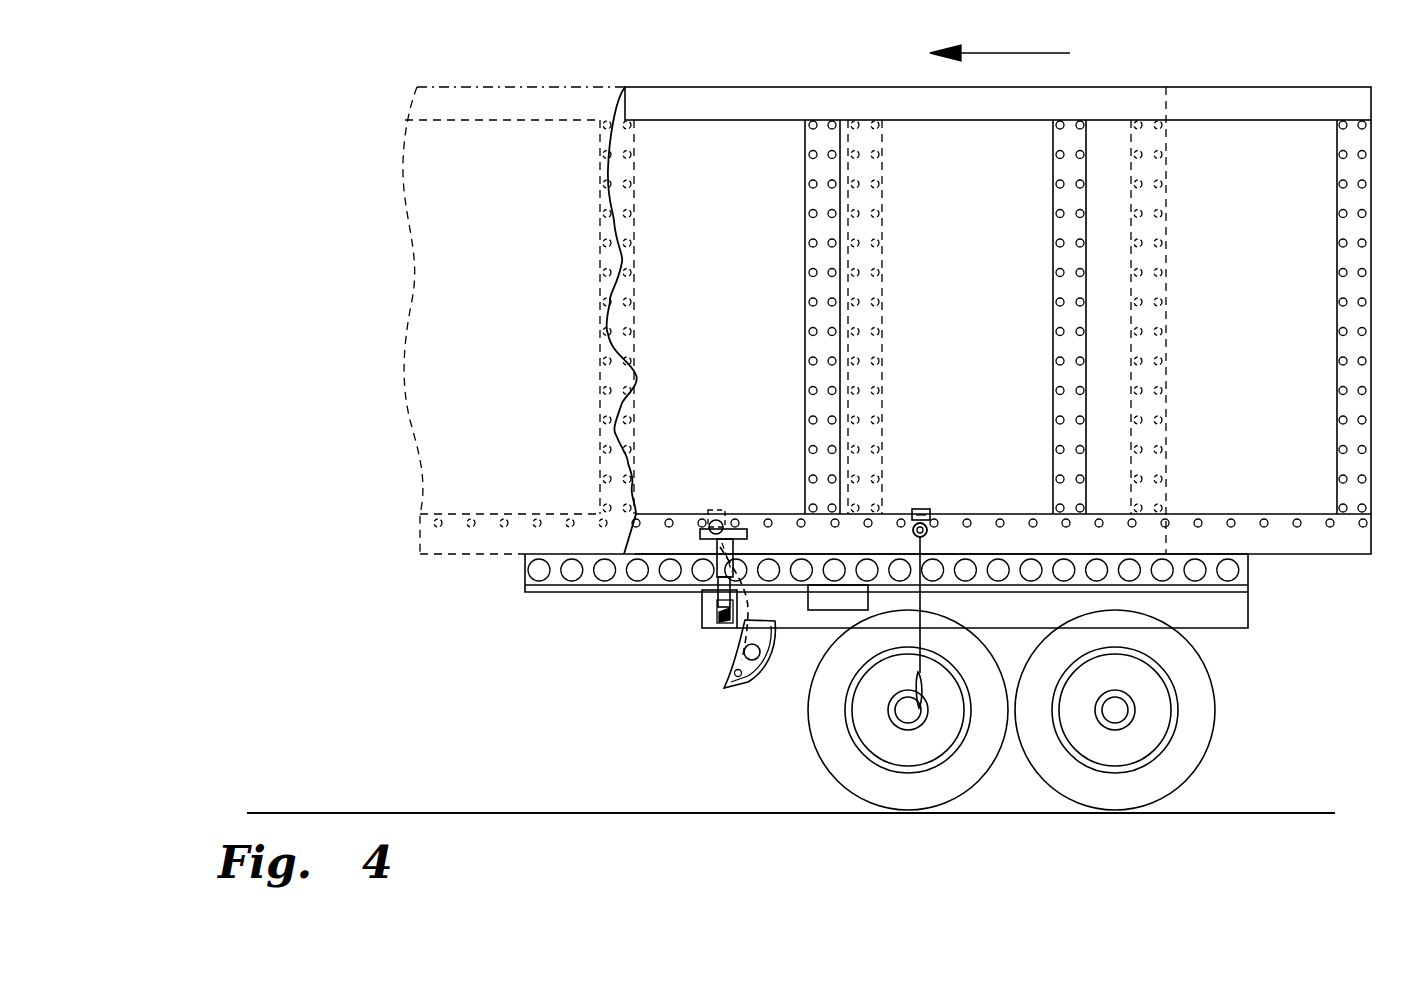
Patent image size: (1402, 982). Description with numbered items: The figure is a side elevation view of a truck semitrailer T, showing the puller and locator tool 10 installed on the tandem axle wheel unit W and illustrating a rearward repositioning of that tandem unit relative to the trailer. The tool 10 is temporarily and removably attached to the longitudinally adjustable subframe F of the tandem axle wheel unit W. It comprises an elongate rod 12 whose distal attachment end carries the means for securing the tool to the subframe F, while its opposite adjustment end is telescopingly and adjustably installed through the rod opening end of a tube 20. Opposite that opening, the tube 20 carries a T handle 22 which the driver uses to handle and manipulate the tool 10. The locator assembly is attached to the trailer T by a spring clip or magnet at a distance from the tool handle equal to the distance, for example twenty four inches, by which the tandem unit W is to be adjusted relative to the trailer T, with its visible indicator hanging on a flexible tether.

The tool 10 is at (749, 470).
The elongate rod 12 is at (702, 594).
The tube 20 is at (712, 556).
The T handle 22 is at (747, 529).
The trailer T is at (656, 87).
The subframe F is at (1250, 600).
The tandem axle wheel unit W is at (1024, 661).